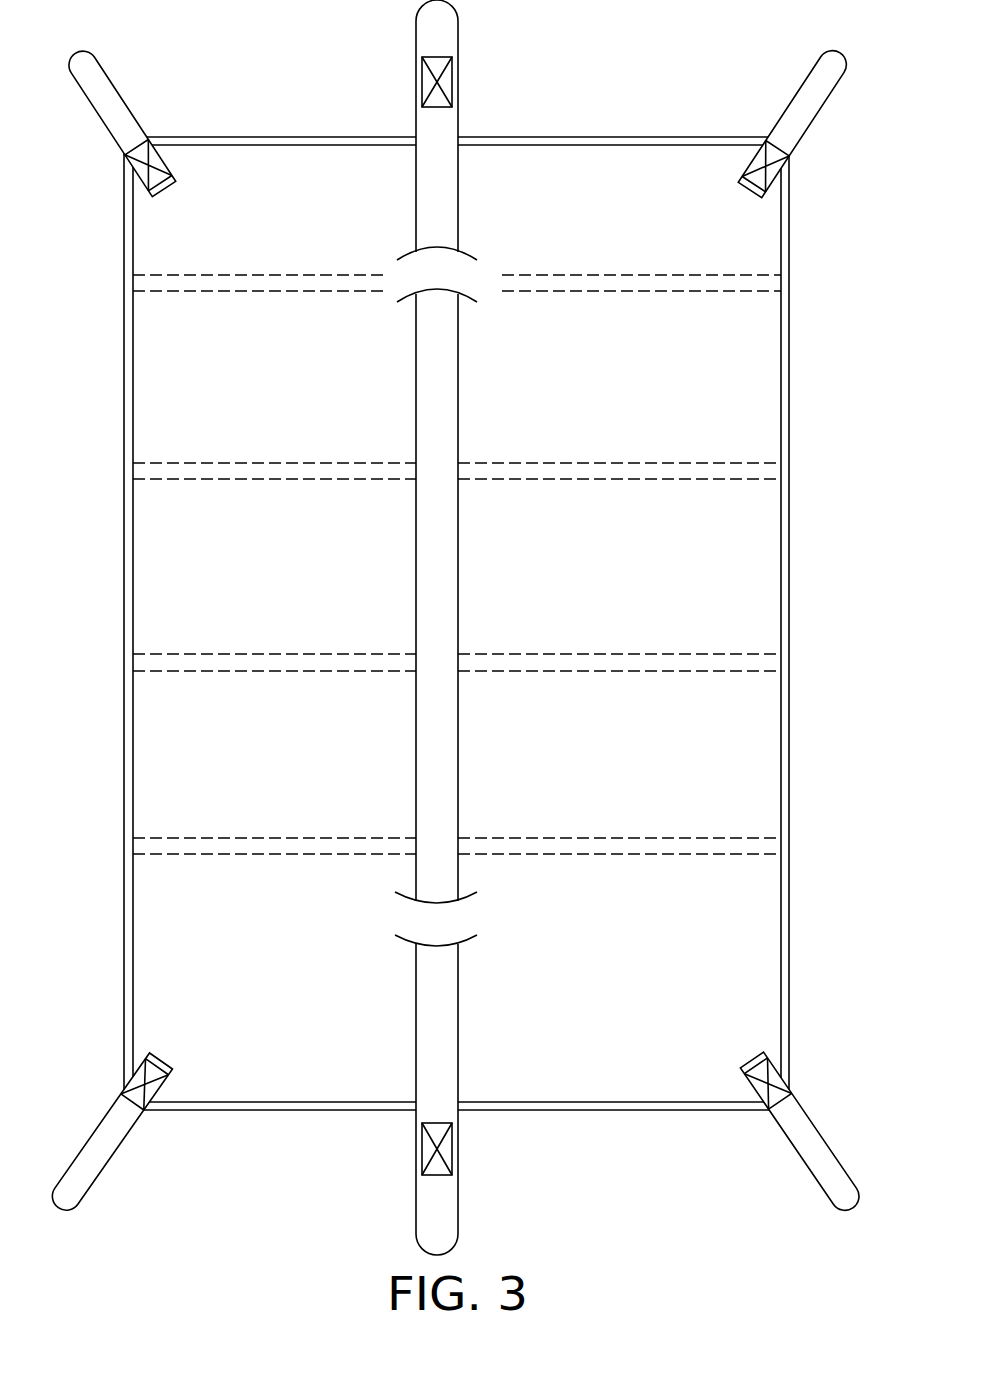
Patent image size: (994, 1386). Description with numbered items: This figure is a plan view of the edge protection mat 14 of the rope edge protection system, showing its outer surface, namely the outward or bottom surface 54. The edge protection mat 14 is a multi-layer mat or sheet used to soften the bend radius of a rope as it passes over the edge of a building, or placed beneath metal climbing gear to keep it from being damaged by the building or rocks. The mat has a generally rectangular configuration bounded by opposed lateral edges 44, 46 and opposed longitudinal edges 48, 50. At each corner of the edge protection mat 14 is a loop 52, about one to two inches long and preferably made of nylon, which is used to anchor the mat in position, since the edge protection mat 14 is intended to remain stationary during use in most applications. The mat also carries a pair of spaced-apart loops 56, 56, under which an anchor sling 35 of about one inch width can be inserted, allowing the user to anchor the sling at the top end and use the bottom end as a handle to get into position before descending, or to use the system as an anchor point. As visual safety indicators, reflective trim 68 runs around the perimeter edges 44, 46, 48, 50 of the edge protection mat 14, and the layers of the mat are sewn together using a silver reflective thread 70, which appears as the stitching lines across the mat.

The edge protection mat 14 is at (472, 627).
The anchor sling 35 is at (470, 627).
The lateral edge 44 is at (626, 137).
The lateral edge 46 is at (319, 1112).
The longitudinal edge 48 is at (791, 610).
The longitudinal edge 50 is at (124, 603).
The loop 52 is at (100, 97).
The outward or bottom surface 54 is at (497, 564).
The spaced-apart loop 56 is at (458, 277).
The reflective trim 68 is at (454, 626).
The silver reflective thread 70 is at (628, 291).